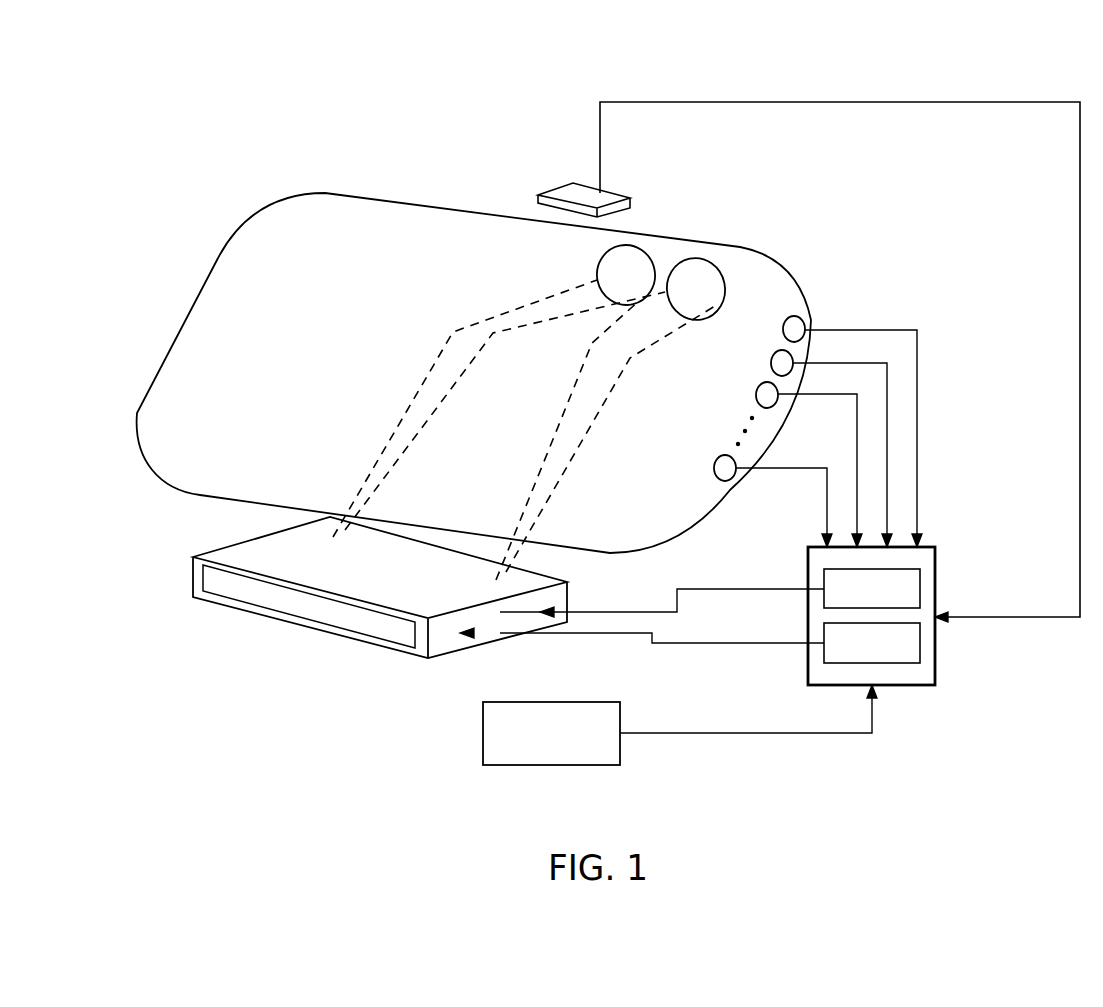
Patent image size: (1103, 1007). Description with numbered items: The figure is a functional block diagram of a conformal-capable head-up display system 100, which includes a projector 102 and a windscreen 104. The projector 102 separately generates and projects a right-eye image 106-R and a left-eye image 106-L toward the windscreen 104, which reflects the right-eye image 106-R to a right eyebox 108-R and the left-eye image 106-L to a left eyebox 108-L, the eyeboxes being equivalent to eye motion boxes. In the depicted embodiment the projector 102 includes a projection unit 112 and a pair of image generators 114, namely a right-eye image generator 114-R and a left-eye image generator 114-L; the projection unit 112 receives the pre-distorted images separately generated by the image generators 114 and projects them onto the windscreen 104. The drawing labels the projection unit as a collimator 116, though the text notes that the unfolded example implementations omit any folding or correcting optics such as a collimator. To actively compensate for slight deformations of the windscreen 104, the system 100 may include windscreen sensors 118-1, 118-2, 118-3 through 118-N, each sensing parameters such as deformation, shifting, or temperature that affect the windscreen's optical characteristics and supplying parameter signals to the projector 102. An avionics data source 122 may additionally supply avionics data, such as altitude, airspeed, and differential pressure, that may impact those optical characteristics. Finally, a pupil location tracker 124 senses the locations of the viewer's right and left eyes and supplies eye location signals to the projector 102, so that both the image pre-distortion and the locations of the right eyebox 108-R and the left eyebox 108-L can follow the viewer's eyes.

The conformal-capable head-up display system 100 is at (119, 128).
The projector 102 is at (310, 698).
The windscreen 104 is at (198, 309).
The right-eye image 106-R is at (574, 385).
The left-eye image 106-L is at (443, 403).
The right eyebox 108-R is at (598, 274).
The left eyebox 108-L is at (712, 262).
The projection unit 112 is at (193, 576).
The image generators 114 is at (934, 547).
The right-eye image generator 114-R is at (920, 590).
The left-eye image generator 114-L is at (920, 643).
The collimator 116 is at (254, 608).
The windscreen sensor 118-1 is at (797, 316).
The windscreen sensor 118-2 is at (771, 363).
The windscreen sensor 118-3 is at (756, 395).
The windscreen sensor 118-N is at (714, 469).
The avionics data source 122 is at (620, 711).
The pupil location tracker 124 is at (616, 196).